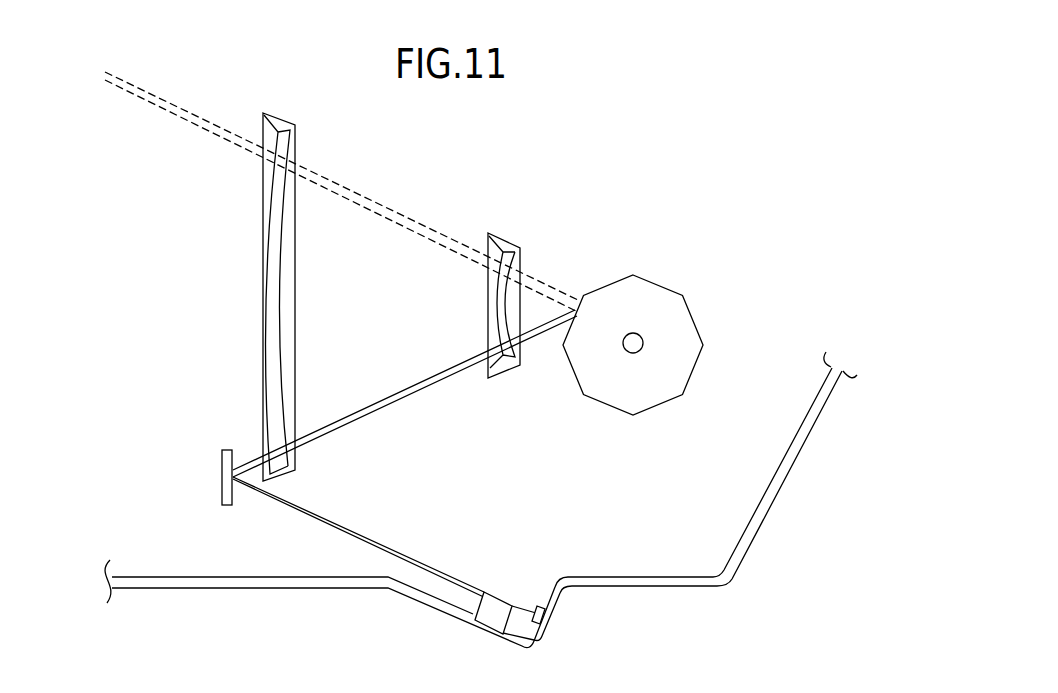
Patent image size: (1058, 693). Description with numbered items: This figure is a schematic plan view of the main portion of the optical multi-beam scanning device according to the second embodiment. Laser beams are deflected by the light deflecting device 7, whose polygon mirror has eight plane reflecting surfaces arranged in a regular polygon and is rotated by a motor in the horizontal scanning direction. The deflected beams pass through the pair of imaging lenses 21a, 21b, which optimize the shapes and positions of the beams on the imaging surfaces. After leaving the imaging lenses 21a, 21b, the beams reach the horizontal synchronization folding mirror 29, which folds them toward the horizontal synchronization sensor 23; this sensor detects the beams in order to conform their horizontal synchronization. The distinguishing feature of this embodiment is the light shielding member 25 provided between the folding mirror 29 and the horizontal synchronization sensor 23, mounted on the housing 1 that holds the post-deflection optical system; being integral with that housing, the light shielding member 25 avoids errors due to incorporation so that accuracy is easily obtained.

The panel 1 is at (727, 508).
The light deflecting device 7 is at (694, 337).
The imaging lens 21a is at (489, 306).
The imaging lens 21b is at (263, 297).
The horizontal synchronization sensor 23 is at (546, 616).
The light shielding member 25 is at (490, 622).
The horizontal synchronization folding mirror 29 is at (225, 505).